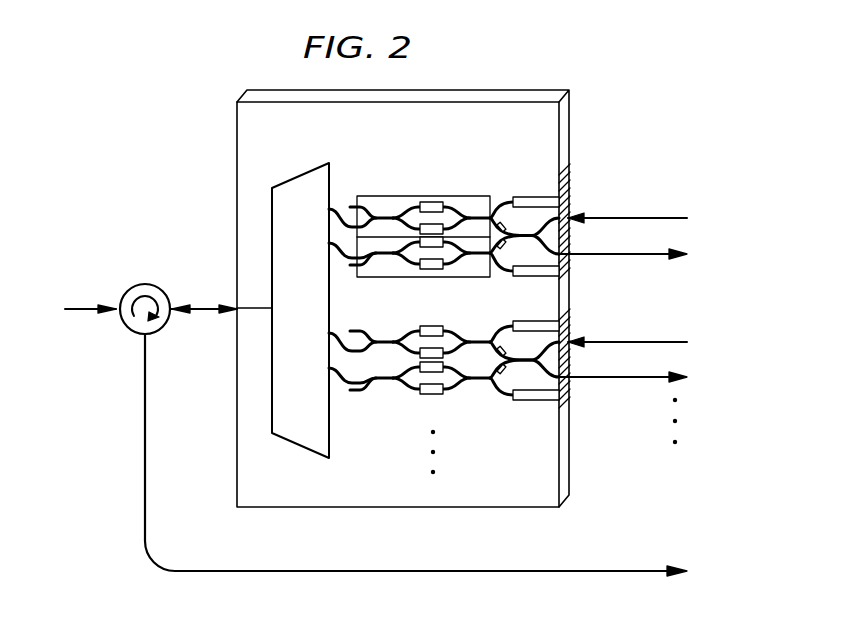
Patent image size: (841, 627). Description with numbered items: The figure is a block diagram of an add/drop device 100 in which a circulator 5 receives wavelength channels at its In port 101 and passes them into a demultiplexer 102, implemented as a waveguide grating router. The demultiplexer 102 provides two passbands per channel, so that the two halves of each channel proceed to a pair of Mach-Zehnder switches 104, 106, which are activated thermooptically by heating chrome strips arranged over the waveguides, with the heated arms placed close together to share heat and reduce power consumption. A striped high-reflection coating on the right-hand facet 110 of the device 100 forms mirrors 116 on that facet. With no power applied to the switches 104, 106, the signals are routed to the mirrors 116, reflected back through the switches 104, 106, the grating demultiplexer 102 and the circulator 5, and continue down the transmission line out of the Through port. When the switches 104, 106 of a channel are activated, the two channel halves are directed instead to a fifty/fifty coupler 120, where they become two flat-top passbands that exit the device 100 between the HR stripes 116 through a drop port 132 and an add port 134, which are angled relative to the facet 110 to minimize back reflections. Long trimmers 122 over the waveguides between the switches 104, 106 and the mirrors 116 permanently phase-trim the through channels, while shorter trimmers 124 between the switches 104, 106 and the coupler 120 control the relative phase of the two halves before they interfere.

The circulator 5 is at (127, 330).
The add/drop device 100 is at (463, 507).
The In port 101 is at (78, 306).
The demultiplexer 102 is at (305, 173).
The Mach-Zehnder switch 104 is at (388, 196).
The Mach-Zehnder switch 106 is at (392, 278).
The right-hand facet 110 is at (566, 443).
The HR stripes or mirrors 116 is at (564, 316).
The 50/50 coupler 120 is at (507, 226).
The trimmer 122 is at (523, 196).
The trimmer 124 is at (502, 371).
The drop port 132 is at (650, 257).
The add port 134 is at (660, 217).